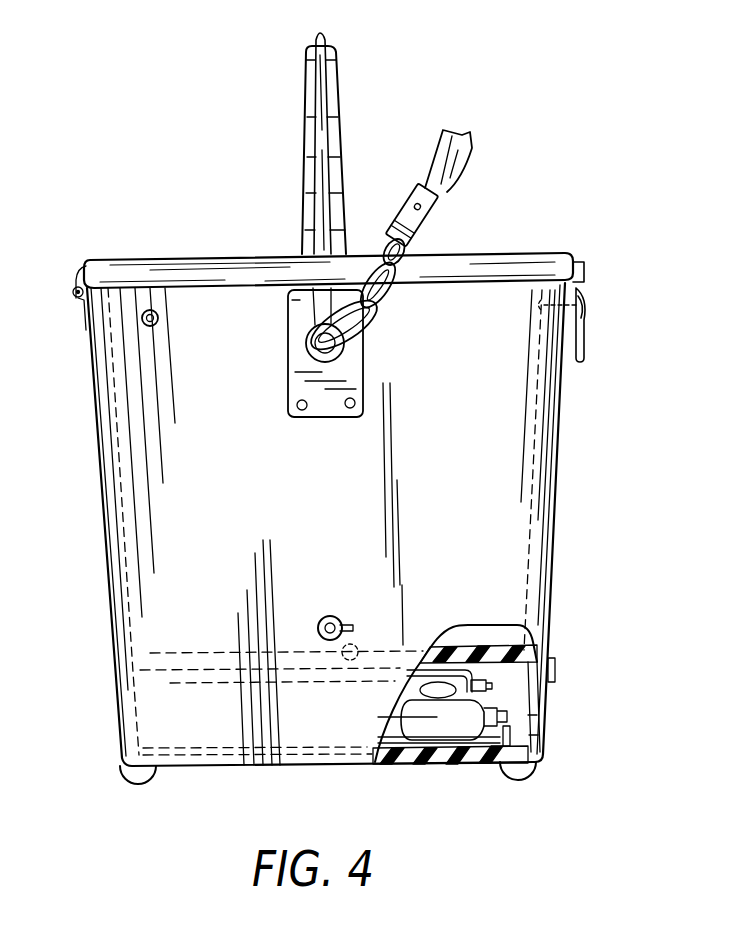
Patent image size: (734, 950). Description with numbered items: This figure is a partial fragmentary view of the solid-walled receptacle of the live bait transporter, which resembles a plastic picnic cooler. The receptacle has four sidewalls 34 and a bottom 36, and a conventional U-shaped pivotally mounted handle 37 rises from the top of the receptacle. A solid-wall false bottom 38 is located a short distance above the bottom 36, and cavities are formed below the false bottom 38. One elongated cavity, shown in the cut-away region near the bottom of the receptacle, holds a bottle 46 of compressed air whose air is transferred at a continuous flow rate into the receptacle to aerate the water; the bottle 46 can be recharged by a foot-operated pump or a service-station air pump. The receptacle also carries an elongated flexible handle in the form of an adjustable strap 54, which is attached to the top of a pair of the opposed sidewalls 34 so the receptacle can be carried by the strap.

The sidewall 34 is at (497, 427).
The bottom 36 is at (479, 764).
The pivotally mounted handle 37 is at (338, 92).
The false bottom 38 is at (540, 710).
The bottle of compressed air 46 is at (438, 716).
The adjustable strap 54 is at (450, 155).